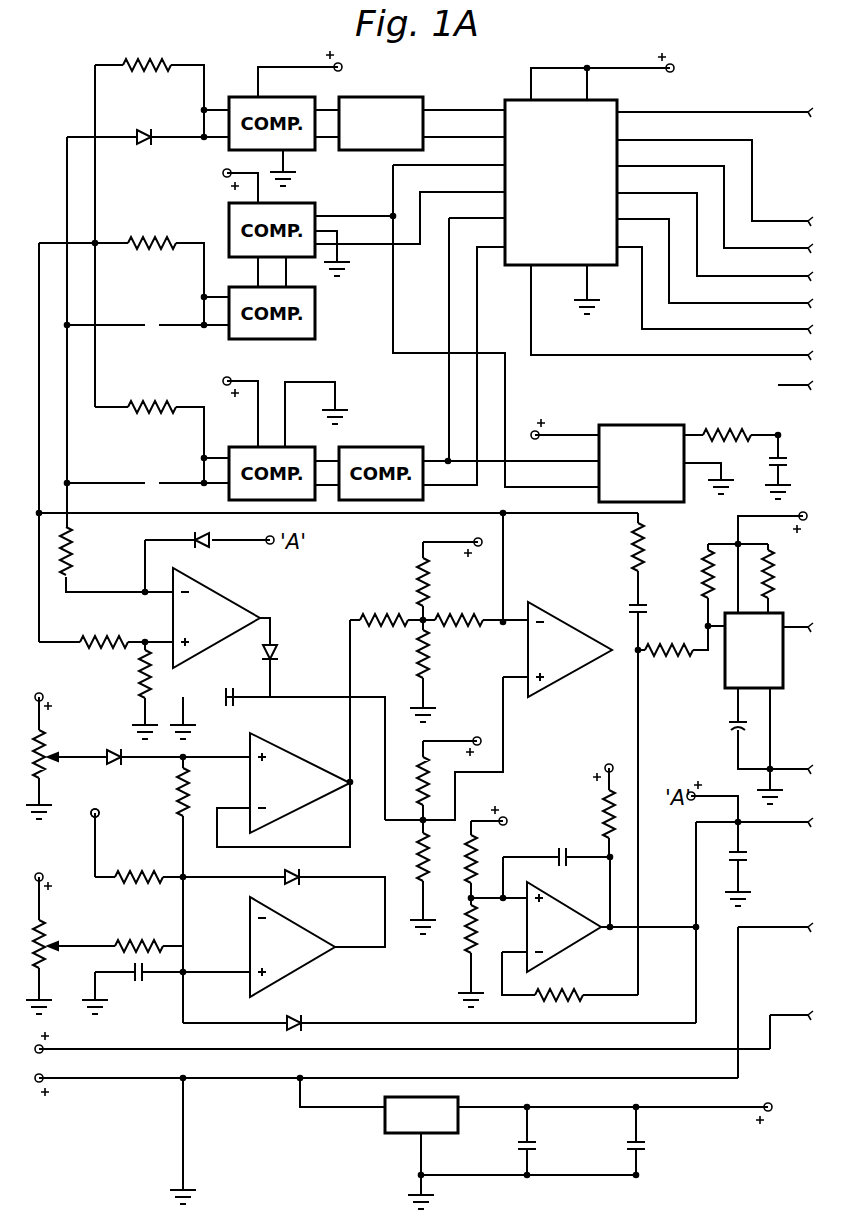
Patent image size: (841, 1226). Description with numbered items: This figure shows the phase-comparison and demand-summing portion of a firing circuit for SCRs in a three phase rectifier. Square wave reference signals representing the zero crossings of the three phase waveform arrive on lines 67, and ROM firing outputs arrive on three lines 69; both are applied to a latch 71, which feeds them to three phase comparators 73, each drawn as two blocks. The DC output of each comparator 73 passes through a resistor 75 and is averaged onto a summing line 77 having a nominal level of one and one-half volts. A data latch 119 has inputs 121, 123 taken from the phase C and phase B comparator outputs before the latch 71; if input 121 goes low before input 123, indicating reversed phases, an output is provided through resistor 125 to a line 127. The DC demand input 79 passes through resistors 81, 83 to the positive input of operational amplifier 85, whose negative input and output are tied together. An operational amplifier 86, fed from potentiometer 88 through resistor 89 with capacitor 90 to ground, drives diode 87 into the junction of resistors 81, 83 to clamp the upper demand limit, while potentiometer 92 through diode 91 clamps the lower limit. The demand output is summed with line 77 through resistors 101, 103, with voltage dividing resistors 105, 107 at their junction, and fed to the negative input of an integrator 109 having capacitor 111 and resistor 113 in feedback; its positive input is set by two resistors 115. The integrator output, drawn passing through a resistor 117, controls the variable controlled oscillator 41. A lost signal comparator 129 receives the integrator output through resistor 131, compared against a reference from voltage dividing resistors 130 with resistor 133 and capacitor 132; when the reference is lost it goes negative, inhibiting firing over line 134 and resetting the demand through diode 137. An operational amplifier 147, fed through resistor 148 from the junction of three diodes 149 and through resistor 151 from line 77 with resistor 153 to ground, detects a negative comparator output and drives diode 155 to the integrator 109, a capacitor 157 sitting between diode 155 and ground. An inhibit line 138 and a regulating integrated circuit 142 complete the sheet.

The resistor 75 is at (150, 68).
The diode 149 is at (138, 146).
The phase comparator 73 is at (370, 97).
The latch 71 is at (518, 98).
The line 67 is at (730, 112).
The line 69 is at (775, 221).
The data latch 119 is at (613, 409).
The data latch input 121 is at (575, 462).
The data latch input 123 is at (575, 487).
The resistor 125 is at (715, 430).
The line 127 is at (778, 412).
The resistor 148 is at (72, 550).
The capacitor 157 is at (215, 545).
The summing line 77 is at (335, 516).
The voltage dividing resistor 105 is at (417, 585).
The resistor 103 is at (462, 612).
The resistor 113 is at (632, 550).
The capacitor 111 is at (643, 605).
The integrator 109 is at (565, 620).
The resistor 151 is at (117, 634).
The operational amplifier 147 is at (225, 595).
The diode 155 is at (275, 640).
The resistor 101 is at (388, 625).
The voltage dividing resistor 107 is at (428, 665).
The resistor 153 is at (139, 678).
The resistor 117 is at (672, 656).
The variable controlled oscillator 41 is at (724, 672).
The potentiometer 92 is at (52, 755).
The diode 91 is at (105, 762).
The operational amplifier 85 is at (285, 750).
The resistor 83 is at (177, 797).
The resistor 133 is at (603, 810).
The capacitor 132 is at (558, 852).
The demand input 79 is at (92, 819).
The resistor 81 is at (150, 872).
The diode 87 is at (283, 874).
The resistor 115 is at (417, 860).
The comparator 129 is at (570, 908).
The line 134 is at (790, 826).
The potentiometer 88 is at (52, 944).
The resistor 89 is at (128, 940).
The operational amplifier 86 is at (306, 926).
The voltage dividing resistor 130 is at (465, 945).
The resistor 131 is at (560, 990).
The diode 137 is at (303, 1018).
The capacitor 90 is at (142, 980).
The inhibit line 138 is at (43, 1052).
The power supply regulating integrated circuit 142 is at (385, 1118).